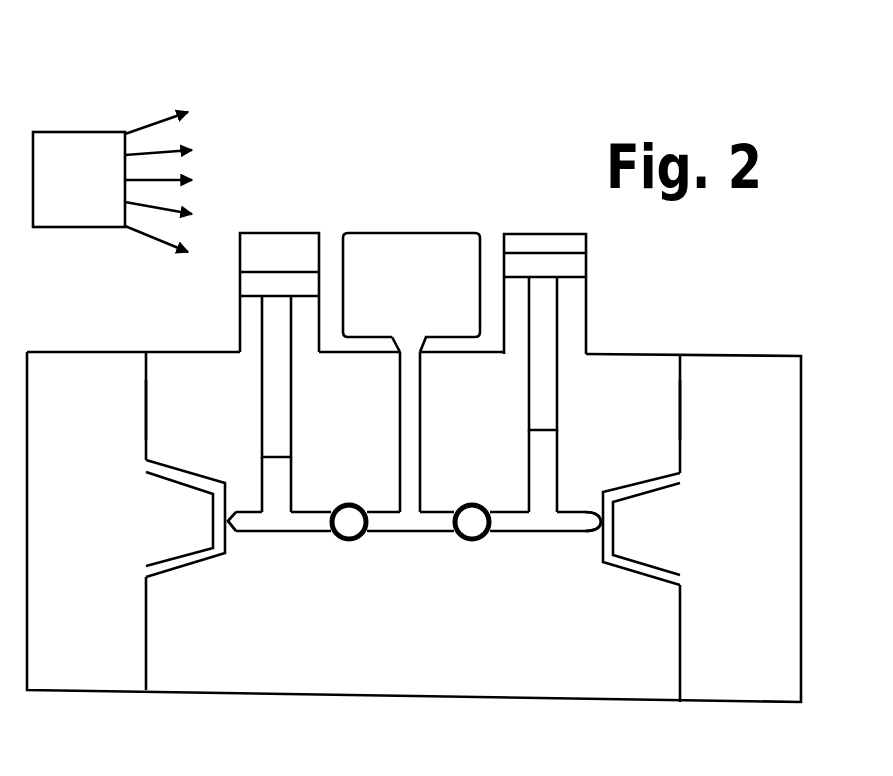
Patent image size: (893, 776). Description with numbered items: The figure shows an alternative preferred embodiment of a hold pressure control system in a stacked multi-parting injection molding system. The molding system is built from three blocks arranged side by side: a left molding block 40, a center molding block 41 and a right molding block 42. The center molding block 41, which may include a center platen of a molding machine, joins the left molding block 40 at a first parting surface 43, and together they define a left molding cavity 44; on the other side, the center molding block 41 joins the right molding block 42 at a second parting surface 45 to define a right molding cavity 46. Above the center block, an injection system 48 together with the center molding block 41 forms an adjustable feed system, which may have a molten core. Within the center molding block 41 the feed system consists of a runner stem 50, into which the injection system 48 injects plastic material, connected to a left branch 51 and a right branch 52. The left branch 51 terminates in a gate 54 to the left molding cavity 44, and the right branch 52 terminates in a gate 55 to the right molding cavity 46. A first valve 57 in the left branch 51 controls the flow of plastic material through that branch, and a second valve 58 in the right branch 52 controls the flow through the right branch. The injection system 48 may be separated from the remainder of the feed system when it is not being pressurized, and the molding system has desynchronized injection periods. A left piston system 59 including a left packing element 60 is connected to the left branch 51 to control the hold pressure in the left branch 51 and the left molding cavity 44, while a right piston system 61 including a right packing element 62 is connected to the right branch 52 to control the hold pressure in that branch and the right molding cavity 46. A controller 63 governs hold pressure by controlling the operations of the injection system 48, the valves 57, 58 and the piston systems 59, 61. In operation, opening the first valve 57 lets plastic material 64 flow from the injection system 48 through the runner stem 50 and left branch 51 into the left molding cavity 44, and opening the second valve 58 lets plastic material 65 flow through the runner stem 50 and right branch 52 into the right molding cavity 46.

The left molding block 40 is at (90, 692).
The center molding block 41 is at (421, 698).
The right molding block 42 is at (745, 706).
The first parting surface 43 is at (147, 413).
The left molding cavity 44 is at (180, 470).
The second parting surface 45 is at (683, 414).
The right molding cavity 46 is at (628, 483).
The injection system 48 is at (395, 243).
The runner stem 50 is at (423, 393).
The left branch 51 is at (305, 536).
The right branch 52 is at (511, 537).
The gate 54 is at (229, 529).
The gate 55 is at (600, 531).
The first valve 57 is at (366, 541).
The second valve 58 is at (472, 545).
The left piston system 59 is at (240, 283).
The left packing element 60 is at (272, 378).
The right piston system 61 is at (587, 263).
The right packing element 62 is at (546, 402).
The controller 63 is at (55, 158).
The plastic material 64 is at (278, 512).
The plastic material 65 is at (543, 515).